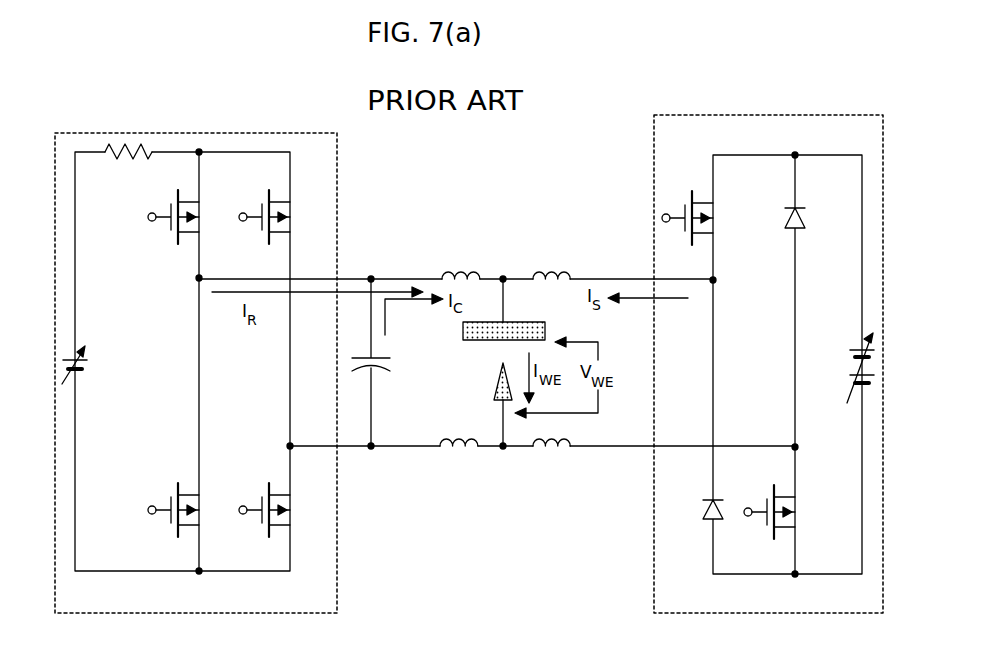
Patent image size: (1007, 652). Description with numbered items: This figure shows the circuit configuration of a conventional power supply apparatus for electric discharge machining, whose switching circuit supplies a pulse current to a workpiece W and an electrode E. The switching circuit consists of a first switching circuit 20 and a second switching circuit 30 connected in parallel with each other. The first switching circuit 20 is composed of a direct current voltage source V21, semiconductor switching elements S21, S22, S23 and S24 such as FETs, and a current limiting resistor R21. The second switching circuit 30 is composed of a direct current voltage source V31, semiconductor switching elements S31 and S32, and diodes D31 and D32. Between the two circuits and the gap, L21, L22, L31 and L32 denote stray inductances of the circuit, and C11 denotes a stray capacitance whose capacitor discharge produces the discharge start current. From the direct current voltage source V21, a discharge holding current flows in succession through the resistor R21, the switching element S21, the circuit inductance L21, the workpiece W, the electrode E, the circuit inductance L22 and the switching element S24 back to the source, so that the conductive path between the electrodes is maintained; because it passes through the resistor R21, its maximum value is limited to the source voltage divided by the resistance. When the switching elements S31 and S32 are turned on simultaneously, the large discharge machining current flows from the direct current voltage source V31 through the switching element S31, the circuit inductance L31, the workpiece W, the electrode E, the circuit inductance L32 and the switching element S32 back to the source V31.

The first switching circuit 20 is at (337, 180).
The second switching circuit 30 is at (654, 158).
The current limiting resistor R21 is at (125, 160).
The direct current voltage source V21 is at (88, 357).
The semiconductor switching element S21 is at (196, 212).
The semiconductor switching element S22 is at (196, 505).
The semiconductor switching element S23 is at (287, 212).
The semiconductor switching element S24 is at (287, 505).
The circuit inductance L21 is at (466, 268).
The circuit inductance L22 is at (460, 456).
The circuit inductance L31 is at (553, 267).
The circuit inductance L32 is at (552, 456).
The stray capacitance C11 is at (390, 366).
The workpiece W is at (545, 328).
The electrode E is at (497, 384).
The semiconductor switching element S31 is at (705, 190).
The semiconductor switching element S32 is at (792, 506).
The diode D31 is at (806, 213).
The diode D32 is at (703, 502).
The direct current voltage source V31 is at (848, 360).